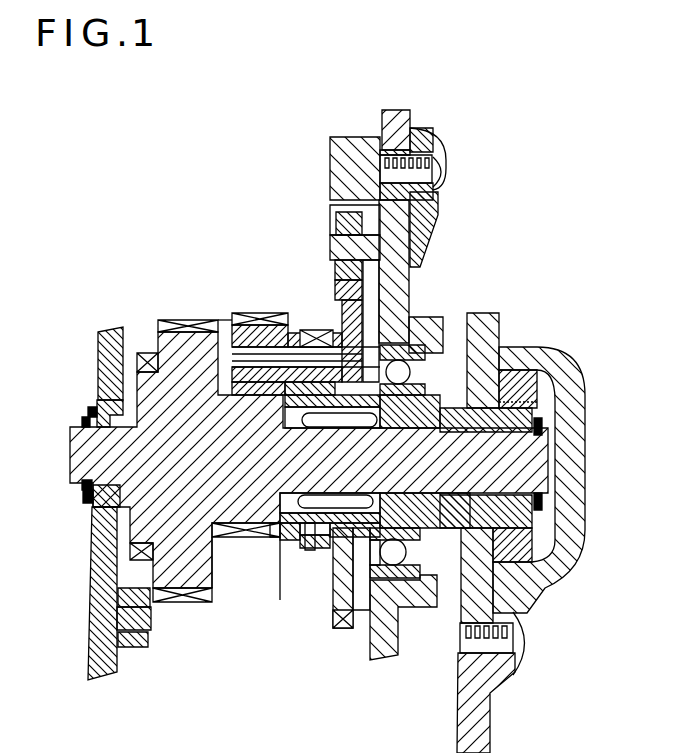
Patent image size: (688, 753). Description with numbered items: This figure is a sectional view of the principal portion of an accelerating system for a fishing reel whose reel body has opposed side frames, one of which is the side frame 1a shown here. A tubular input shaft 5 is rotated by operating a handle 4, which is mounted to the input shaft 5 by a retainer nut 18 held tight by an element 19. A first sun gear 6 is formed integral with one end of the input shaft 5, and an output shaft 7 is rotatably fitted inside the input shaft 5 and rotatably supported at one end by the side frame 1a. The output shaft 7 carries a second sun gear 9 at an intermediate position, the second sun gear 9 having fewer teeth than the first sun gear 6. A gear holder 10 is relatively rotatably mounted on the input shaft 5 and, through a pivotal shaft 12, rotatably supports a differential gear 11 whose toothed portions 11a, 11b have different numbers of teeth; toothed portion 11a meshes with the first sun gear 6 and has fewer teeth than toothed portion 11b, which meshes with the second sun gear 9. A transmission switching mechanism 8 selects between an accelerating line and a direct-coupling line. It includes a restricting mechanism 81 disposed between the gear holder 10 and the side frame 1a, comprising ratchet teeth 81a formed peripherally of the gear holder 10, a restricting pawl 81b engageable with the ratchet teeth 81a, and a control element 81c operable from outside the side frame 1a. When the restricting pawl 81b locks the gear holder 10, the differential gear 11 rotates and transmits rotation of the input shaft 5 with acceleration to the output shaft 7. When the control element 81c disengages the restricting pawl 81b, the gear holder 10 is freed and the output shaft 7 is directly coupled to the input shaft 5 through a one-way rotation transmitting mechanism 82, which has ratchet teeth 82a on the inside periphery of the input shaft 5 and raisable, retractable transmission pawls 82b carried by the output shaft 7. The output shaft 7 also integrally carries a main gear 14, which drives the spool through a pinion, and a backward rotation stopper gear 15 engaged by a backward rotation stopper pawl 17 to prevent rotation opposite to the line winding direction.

The side frame 1a is at (98, 346).
The handle 4 is at (463, 708).
The input shaft 5 is at (443, 398).
The first sun gear 6 is at (290, 553).
The output shaft 7 is at (540, 462).
The transmission switching mechanism 8 is at (322, 226).
The second sun gear 9 is at (240, 538).
The gear holder 10 is at (372, 282).
The differential gear 11 is at (259, 312).
The toothed portion 11a is at (292, 326).
The toothed portion 11b is at (246, 318).
The pivotal shaft 12 is at (316, 328).
The main gear 14 is at (147, 352).
The backward rotation stopper gear 15 is at (160, 330).
The backward rotation stopper pawl 17 is at (127, 574).
The retainer nut 18 is at (520, 368).
The element for keeping the retainer nut tight 19 is at (572, 398).
The restricting mechanism 81 is at (412, 252).
The ratchet teeth 81a is at (322, 335).
The restricting pawl 81b is at (328, 350).
The control element 81c is at (356, 137).
The one-way rotation transmitting mechanism 82 is at (400, 350).
The ratchet teeth 82a is at (300, 560).
The transmission pawls 82b is at (312, 552).